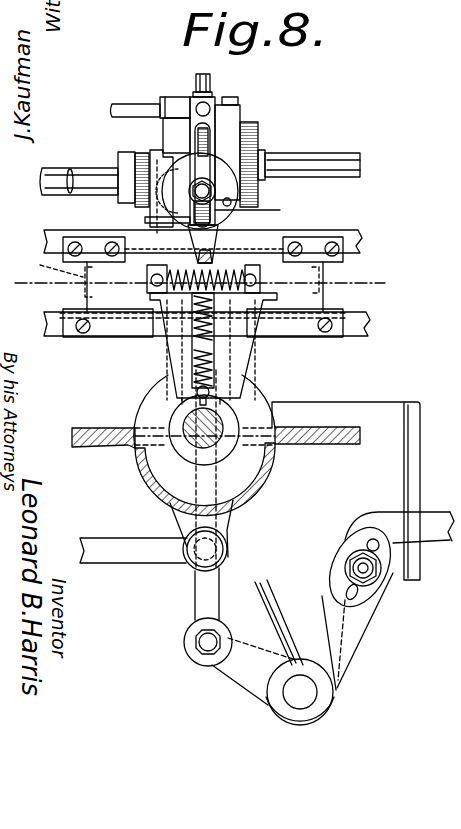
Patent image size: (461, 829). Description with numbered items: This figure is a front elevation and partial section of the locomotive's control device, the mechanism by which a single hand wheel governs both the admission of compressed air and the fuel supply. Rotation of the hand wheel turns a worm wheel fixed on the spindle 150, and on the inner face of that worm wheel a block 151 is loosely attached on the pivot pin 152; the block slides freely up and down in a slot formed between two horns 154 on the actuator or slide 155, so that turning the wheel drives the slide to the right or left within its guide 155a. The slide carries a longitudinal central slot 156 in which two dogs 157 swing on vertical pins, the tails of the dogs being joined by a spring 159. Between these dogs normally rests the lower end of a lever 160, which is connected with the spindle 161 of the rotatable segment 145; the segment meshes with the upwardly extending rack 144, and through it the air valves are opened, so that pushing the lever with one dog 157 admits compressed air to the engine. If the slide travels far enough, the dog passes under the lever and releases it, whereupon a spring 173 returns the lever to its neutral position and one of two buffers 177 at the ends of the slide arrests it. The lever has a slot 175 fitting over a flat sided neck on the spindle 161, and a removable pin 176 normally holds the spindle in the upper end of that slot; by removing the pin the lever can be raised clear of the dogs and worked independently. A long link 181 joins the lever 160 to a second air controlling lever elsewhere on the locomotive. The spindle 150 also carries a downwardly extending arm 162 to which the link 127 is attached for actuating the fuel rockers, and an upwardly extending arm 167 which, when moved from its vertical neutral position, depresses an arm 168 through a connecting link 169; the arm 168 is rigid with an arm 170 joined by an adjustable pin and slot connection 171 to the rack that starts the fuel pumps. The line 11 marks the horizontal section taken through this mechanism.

The section line 11 is at (50, 270).
The link 127 is at (158, 553).
The rack 144 is at (163, 160).
The rotatable segment 145 is at (207, 153).
The spindle 150 is at (187, 442).
The block 151 is at (198, 355).
The pivot pin 152 is at (195, 338).
The horns 154 is at (182, 385).
The actuator or slide 155 is at (313, 298).
The guide 155a is at (347, 242).
The longitudinal central slot 156 is at (157, 295).
The dogs 157 is at (147, 280).
The spring 159 is at (233, 270).
The lever 160 is at (207, 88).
The spindle 161 is at (193, 196).
The arm 162 is at (223, 523).
The arm 167 is at (247, 370).
The arm 168 is at (263, 692).
The connecting link 169 is at (203, 608).
The arm 170 is at (343, 633).
The adjustable pin and slot connection 171 is at (365, 577).
The spring 173 is at (242, 367).
The slot 175 is at (192, 232).
The removable pin 176 is at (257, 197).
The buffers 177 is at (41, 265).
The long link 181 is at (128, 105).